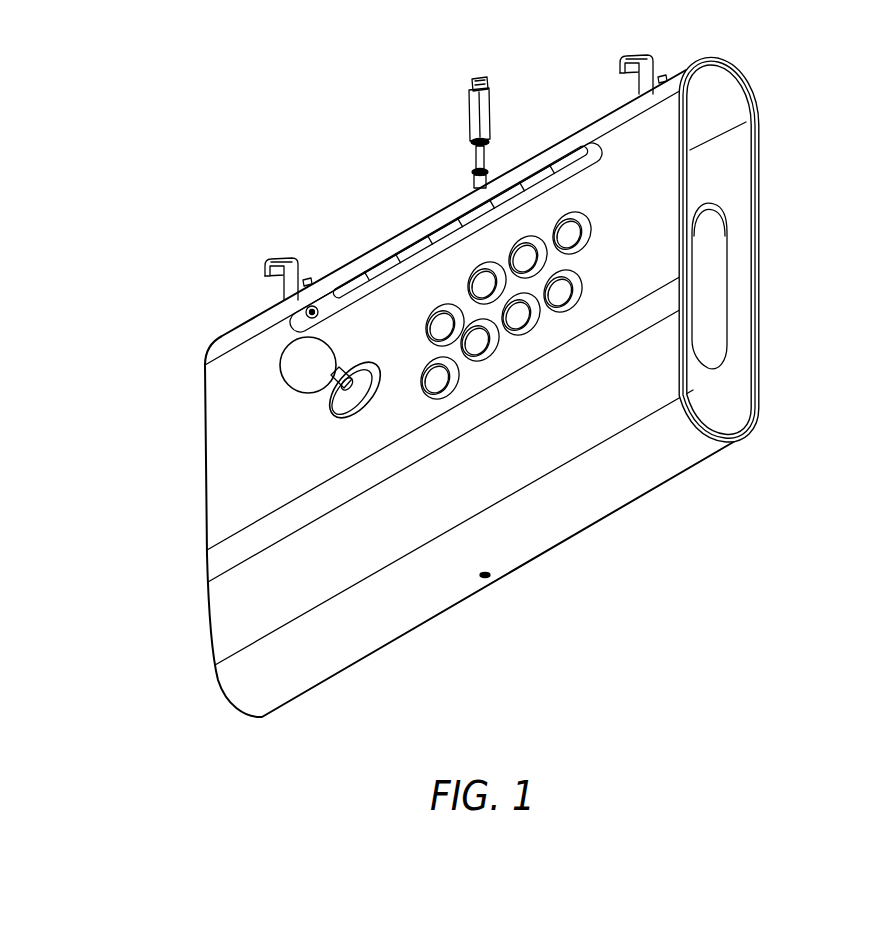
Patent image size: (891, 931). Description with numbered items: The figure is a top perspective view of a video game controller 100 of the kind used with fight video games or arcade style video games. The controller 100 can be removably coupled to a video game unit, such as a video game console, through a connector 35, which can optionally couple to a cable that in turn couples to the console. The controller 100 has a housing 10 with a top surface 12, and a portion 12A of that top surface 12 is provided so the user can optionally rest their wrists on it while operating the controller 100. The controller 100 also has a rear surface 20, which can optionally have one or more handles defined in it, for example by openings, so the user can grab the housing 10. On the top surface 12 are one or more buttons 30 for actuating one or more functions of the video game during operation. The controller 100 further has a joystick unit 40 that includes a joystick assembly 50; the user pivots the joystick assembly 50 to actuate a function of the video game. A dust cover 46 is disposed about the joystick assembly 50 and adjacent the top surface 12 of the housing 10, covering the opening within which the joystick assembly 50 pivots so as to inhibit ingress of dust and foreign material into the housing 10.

The video game controller 100 is at (140, 118).
The housing 10 is at (224, 517).
The top surface 12 is at (648, 282).
The portion of the top surface 12A is at (235, 627).
The rear surface 20 is at (784, 268).
The buttons 30 is at (620, 187).
The connector 35 is at (521, 74).
The joystick unit 40 is at (188, 384).
The dust cover 46 is at (362, 368).
The joystick assembly 50 is at (313, 433).